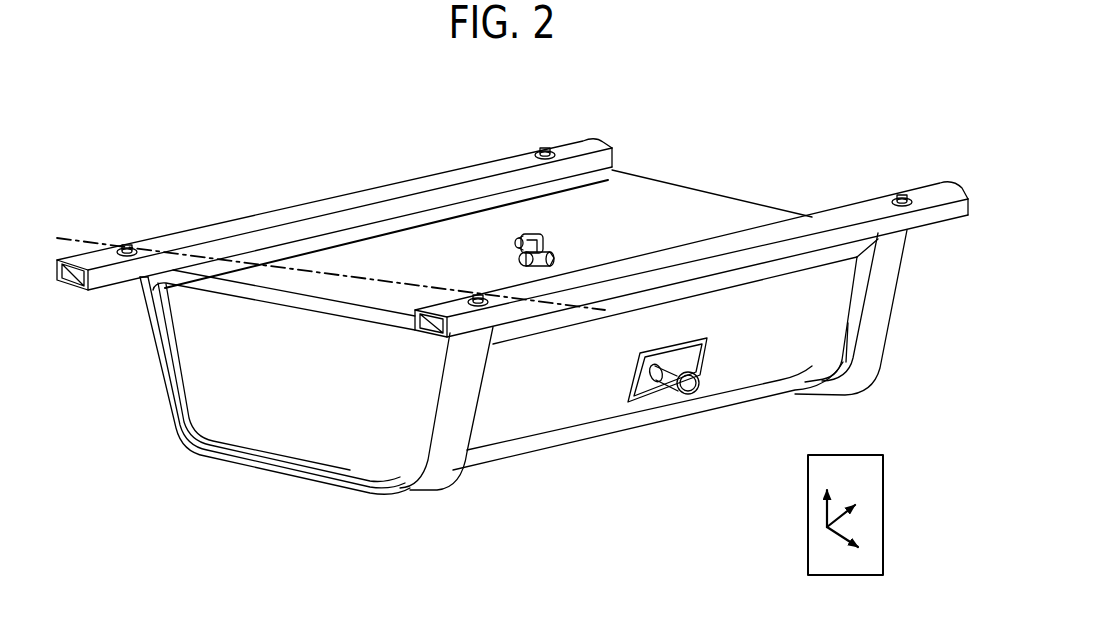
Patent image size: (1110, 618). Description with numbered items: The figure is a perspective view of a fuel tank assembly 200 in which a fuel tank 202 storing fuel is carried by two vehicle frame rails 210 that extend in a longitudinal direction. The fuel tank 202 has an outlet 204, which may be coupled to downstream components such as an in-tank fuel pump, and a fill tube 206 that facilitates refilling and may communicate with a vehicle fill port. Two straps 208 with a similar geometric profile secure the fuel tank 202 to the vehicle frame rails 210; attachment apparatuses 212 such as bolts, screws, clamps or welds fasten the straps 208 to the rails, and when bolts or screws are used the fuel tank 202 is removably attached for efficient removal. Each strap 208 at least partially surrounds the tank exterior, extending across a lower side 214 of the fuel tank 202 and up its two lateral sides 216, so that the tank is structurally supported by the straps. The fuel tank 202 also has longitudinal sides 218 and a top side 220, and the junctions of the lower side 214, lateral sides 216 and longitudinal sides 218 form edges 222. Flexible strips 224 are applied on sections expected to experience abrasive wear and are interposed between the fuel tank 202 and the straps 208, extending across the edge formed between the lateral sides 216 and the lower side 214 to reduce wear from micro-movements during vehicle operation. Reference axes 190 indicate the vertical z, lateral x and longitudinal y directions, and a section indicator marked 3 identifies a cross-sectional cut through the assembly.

The fuel tank assembly 200 is at (878, 127).
The fuel tank 202 is at (679, 433).
The outlet 204 is at (507, 250).
The fill tube 206 is at (674, 357).
The straps 208 is at (495, 380).
The vehicle frame rails 210 is at (559, 133).
The attachment apparatuses 212 is at (546, 149).
The lower side 214 is at (307, 468).
The lateral sides 216 is at (771, 318).
The longitudinal sides 218 is at (297, 368).
The top side 220 is at (581, 232).
The edges 222 is at (334, 306).
The flexible strips 224 is at (228, 456).
The reference axes 190 is at (808, 538).
The section line 3- 3 is at (90, 231).